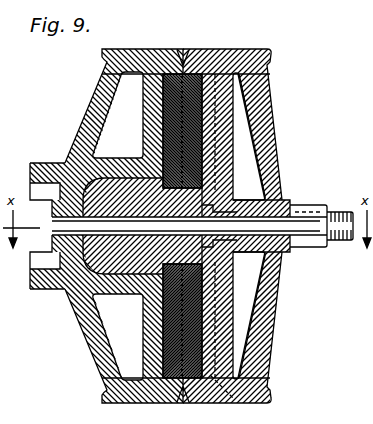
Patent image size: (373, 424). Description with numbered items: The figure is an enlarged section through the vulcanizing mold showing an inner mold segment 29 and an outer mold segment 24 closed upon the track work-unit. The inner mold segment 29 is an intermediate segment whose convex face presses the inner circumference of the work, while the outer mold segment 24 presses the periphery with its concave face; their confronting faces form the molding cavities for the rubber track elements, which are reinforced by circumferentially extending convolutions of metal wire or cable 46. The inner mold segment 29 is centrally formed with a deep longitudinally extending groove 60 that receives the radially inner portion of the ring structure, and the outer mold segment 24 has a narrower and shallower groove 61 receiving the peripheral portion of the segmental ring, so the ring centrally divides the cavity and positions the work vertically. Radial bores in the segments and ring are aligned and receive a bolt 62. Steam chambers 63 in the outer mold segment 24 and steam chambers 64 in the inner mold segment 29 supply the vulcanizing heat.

The mold segment 29 is at (99, 93).
The steam chamber 64 is at (106, 123).
The mold segment 24 is at (265, 109).
The steam chamber 63 is at (255, 151).
The bolt 62 is at (331, 210).
The groove 61 is at (213, 246).
The groove 60 is at (63, 291).
The wire or cable 46 is at (200, 354).